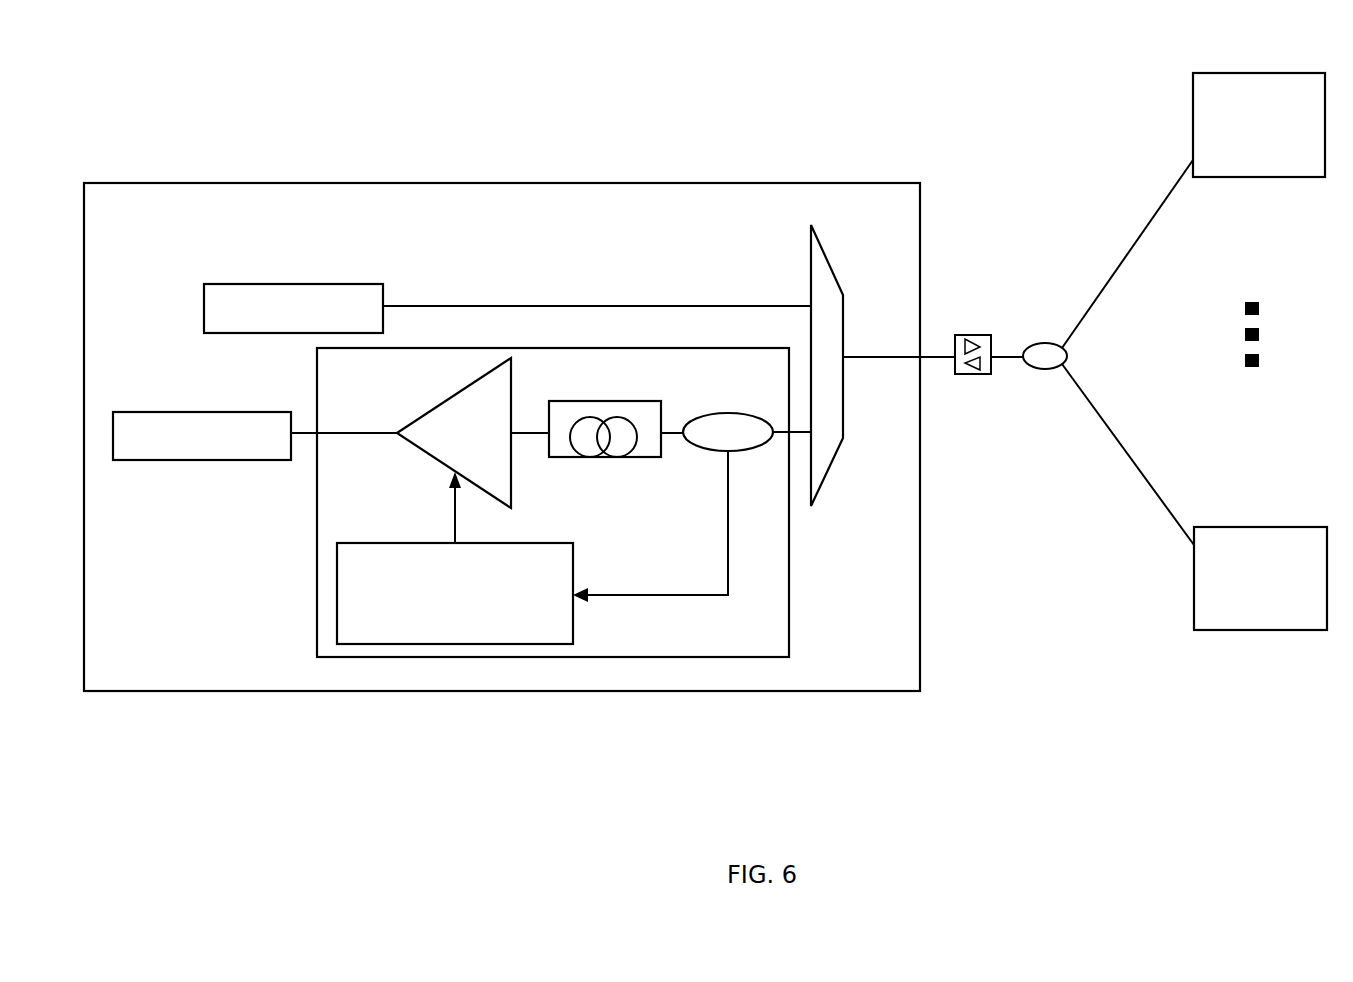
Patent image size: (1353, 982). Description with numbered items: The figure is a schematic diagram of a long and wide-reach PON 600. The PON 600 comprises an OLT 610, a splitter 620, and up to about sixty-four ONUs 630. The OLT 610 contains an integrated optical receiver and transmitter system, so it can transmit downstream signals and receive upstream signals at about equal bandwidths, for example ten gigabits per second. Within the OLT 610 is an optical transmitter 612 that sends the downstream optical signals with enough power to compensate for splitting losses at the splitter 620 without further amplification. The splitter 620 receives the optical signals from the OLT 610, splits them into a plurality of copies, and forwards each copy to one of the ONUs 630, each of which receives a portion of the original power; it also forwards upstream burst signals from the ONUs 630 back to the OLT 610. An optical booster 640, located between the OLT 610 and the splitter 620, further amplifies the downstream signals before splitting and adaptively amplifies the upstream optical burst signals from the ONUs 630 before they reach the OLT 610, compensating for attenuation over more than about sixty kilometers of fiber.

The wide-reach PON 600 is at (285, 78).
The OLT 610 is at (180, 183).
The optical transmitter 612 is at (328, 283).
The splitter 620 is at (1036, 345).
The ONUs 630 is at (1248, 73).
The optical booster 640 is at (959, 378).